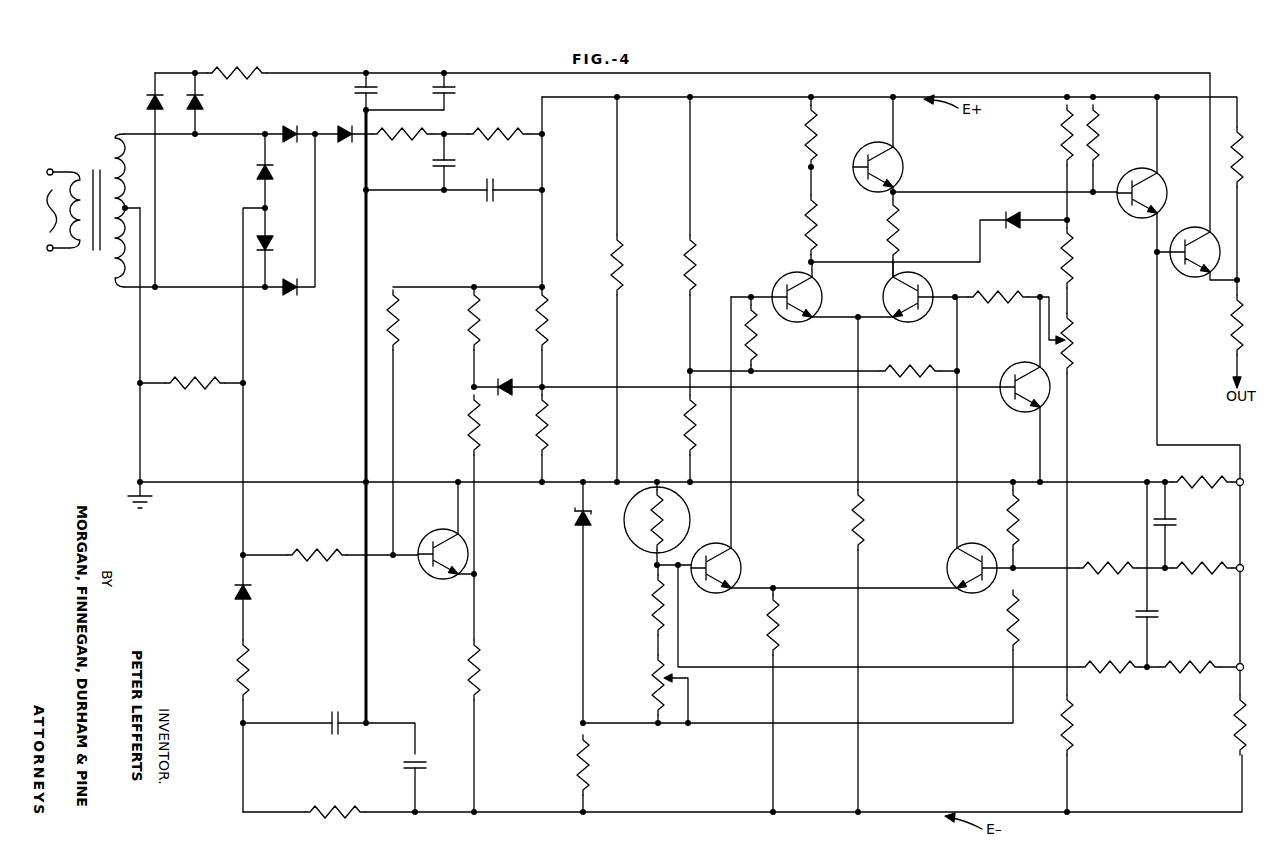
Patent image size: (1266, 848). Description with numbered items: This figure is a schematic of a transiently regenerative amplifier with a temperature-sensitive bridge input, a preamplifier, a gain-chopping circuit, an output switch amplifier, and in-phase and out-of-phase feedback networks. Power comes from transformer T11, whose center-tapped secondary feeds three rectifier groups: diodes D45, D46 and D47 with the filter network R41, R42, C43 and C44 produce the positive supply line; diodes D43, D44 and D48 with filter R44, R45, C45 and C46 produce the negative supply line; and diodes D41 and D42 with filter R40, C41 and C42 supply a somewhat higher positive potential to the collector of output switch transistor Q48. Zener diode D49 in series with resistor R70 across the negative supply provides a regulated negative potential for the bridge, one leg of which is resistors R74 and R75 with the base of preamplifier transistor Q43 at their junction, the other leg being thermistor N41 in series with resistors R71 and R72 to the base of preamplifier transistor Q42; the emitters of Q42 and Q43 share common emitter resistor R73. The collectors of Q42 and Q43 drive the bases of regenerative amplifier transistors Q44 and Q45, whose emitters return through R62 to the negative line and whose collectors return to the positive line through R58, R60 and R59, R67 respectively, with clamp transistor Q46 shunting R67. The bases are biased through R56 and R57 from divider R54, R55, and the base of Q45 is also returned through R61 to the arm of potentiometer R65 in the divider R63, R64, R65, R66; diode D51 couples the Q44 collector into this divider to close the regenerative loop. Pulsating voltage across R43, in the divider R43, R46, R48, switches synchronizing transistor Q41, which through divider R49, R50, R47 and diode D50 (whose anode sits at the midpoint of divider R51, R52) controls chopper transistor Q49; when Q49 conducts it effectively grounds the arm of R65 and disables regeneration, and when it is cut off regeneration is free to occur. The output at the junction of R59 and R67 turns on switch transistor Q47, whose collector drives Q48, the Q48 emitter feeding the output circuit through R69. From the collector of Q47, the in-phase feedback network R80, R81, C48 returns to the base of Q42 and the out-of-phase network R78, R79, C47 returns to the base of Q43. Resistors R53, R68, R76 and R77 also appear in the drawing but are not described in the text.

The transformer T11 is at (91, 268).
The filter resistor R40 is at (228, 68).
The filter resistor R41 is at (428, 146).
The filter resistor R42 is at (521, 140).
The resistor R43 is at (211, 380).
The filter resistor R44 is at (275, 672).
The filter resistor R45 is at (346, 814).
The divider resistor R46 is at (336, 556).
The divider resistor R47 is at (470, 655).
The divider resistor R48 is at (425, 342).
The divider resistor R49 is at (503, 335).
The divider resistor R50 is at (459, 425).
The divider resistor R51 is at (538, 442).
The divider resistor R52 is at (574, 333).
The resistor R53 is at (610, 256).
The voltage divider resistor R54 is at (680, 256).
The voltage divider resistor R55 is at (686, 432).
The base return resistor R56 is at (780, 352).
The base return resistor R57 is at (931, 366).
The collector return resistor R58 is at (806, 234).
The collector return resistor R59 is at (896, 216).
The collector return resistor R60 is at (804, 142).
The resistor R61 is at (1018, 292).
The common emitter resistor R62 is at (864, 538).
The divider resistor R63 is at (1064, 140).
The divider resistor R64 is at (1066, 250).
The potentiometer R65 is at (1075, 350).
The divider resistor R66 is at (1080, 716).
The collector return resistor R67 is at (1098, 144).
The resistor R68 is at (1239, 123).
The output resistance R69 is at (1232, 332).
The resistor R70 is at (588, 778).
The bridge resistor R71 is at (652, 618).
The bridge resistor R72 is at (652, 694).
The common emitter resistor R73 is at (780, 628).
The bridge resistor R74 is at (1016, 532).
The bridge resistor R75 is at (1002, 628).
The resistor R76 is at (1232, 738).
The resistor R77 is at (1212, 480).
The out-of-phase feedback resistor R78 is at (1220, 565).
The out-of-phase feedback resistor R79 is at (1126, 564).
The in-phase feedback resistor R80 is at (1221, 662).
The in-phase feedback resistor R81 is at (1128, 662).
The filter capacitor C41 is at (354, 96).
The filter capacitor C42 is at (434, 98).
The filter capacitor C43 is at (442, 158).
The filter capacitor C44 is at (484, 198).
The filter capacitor C45 is at (356, 722).
The filter capacitor C46 is at (409, 770).
The out-of-phase feedback capacitor C47 is at (1174, 522).
The in-phase feedback capacitor C48 is at (1156, 620).
The diode D41 is at (147, 98).
The diode D42 is at (199, 102).
The diode D43 is at (263, 168).
The diode D44 is at (280, 228).
The diode D45 is at (283, 130).
The diode D46 is at (278, 292).
The diode D47 is at (332, 154).
The diode D48 is at (228, 612).
The zener diode D49 is at (581, 520).
The diode D50 is at (486, 382).
The diode D51 is at (1008, 206).
The synchronizing transistor Q41 is at (441, 545).
The preamplifier transistor Q42 is at (731, 565).
The preamplifier transistor Q43 is at (955, 568).
The regenerative amplifier transistor Q44 is at (793, 288).
The regenerative amplifier transistor Q45 is at (895, 297).
The clamp transistor Q46 is at (891, 167).
The switch transistor Q47 is at (1154, 192).
The output switch transistor Q48 is at (1195, 265).
The chopper transistor Q49 is at (1021, 377).
The thermistor N41 is at (696, 495).